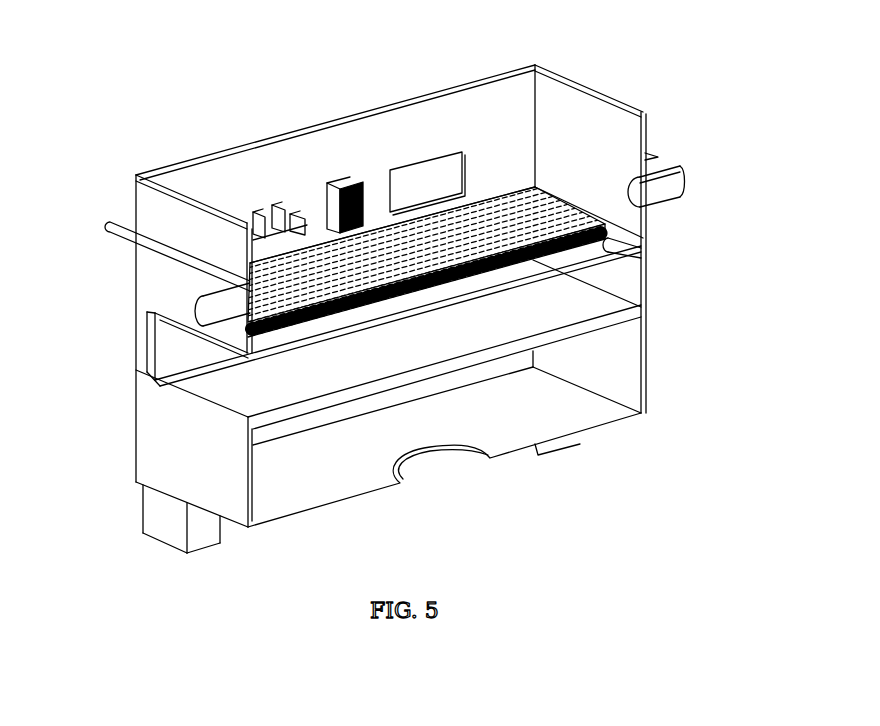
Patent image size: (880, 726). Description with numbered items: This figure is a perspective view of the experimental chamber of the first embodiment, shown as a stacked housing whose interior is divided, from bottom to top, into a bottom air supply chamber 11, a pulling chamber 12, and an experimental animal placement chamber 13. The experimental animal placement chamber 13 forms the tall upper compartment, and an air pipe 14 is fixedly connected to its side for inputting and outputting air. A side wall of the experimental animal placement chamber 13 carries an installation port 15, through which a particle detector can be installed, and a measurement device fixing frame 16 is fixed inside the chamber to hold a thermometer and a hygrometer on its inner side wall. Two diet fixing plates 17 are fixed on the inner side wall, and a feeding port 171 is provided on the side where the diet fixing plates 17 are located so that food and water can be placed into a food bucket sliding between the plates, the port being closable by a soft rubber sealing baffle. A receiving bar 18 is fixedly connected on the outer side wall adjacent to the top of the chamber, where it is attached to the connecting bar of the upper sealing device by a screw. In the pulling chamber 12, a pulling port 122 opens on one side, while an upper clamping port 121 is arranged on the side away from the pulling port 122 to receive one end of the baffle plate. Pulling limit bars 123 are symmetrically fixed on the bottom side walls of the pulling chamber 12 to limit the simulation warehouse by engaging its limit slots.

The bottom air supply chamber 11 is at (552, 409).
The pulling chamber 12 is at (625, 280).
The upper clamping port 121 is at (630, 250).
The pulling port 122 is at (193, 398).
The pulling limit bar 123 is at (155, 371).
The experimental animal placement chamber 13 is at (610, 150).
The air pipe 14 is at (665, 197).
The installation port 15 is at (425, 162).
The measurement device fixing frame 16 is at (336, 188).
The diet fixing plate 17 is at (305, 207).
The feeding port 171 is at (262, 213).
The receiving bar 18 is at (150, 244).